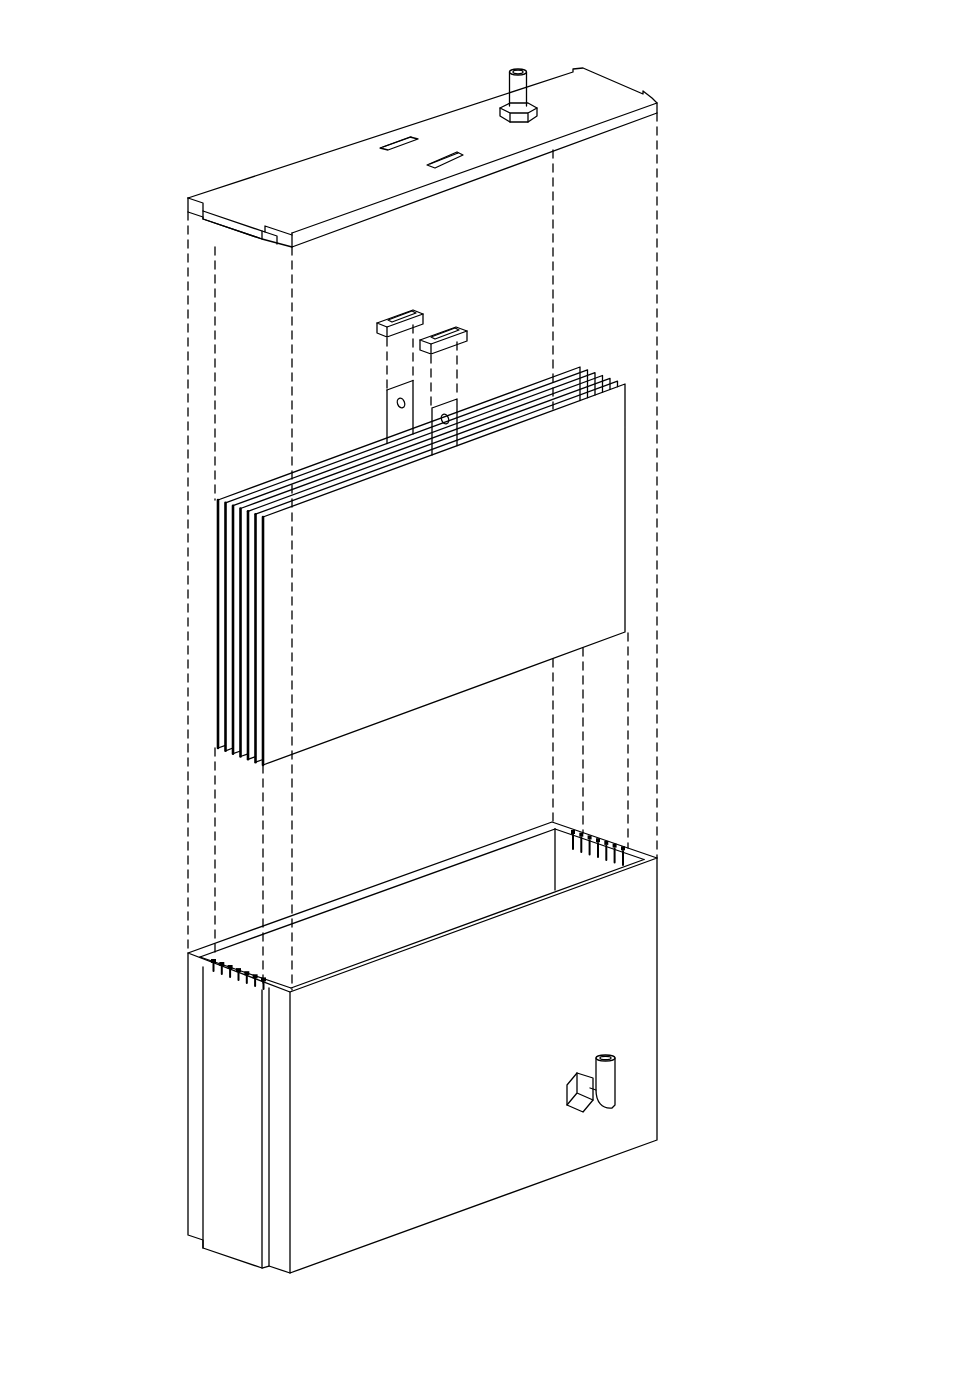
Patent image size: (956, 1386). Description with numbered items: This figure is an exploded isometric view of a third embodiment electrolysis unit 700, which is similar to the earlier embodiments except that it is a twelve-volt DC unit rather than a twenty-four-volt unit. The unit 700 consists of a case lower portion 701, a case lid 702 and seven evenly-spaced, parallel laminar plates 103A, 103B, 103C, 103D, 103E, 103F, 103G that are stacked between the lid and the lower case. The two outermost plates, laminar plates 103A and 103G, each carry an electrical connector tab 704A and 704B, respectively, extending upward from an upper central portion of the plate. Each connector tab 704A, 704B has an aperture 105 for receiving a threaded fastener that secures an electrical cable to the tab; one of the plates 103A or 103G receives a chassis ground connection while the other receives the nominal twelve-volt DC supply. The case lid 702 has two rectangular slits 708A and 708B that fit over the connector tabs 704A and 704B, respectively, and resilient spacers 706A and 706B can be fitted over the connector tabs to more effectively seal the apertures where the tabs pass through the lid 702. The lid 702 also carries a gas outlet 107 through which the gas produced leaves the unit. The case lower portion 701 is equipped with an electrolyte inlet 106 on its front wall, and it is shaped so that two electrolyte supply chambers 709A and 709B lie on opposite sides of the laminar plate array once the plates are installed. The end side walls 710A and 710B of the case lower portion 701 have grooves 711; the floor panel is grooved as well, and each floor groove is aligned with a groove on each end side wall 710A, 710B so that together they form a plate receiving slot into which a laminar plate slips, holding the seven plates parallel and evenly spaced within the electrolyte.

The third embodiment electrolysis unit 700 is at (235, 67).
The case lid 702 is at (323, 183).
The rectangular slit 708A is at (441, 153).
The rectangular slit 708B is at (397, 131).
The gas outlet 107 is at (517, 93).
The resilient spacer 706A is at (450, 343).
The resilient spacer 706B is at (403, 325).
The aperture 105 is at (388, 391).
The electrical connector tab 704A is at (447, 430).
The electrical connector tab 704B is at (400, 420).
The laminar plate 103A is at (263, 742).
The laminar plate 103B is at (257, 703).
The laminar plate 103C is at (250, 662).
The laminar plate 103D is at (243, 623).
The laminar plate 103E is at (236, 583).
The laminar plate 103F is at (228, 543).
The laminar plate 103G is at (220, 502).
The case lower portion 701 is at (447, 1185).
The electrolyte supply chamber 709A is at (487, 903).
The electrolyte supply chamber 709B is at (350, 903).
The end side wall 710A is at (640, 852).
The end side wall 710B is at (228, 1082).
The grooves 711 is at (607, 828).
The electrolyte inlet 106 is at (603, 1098).